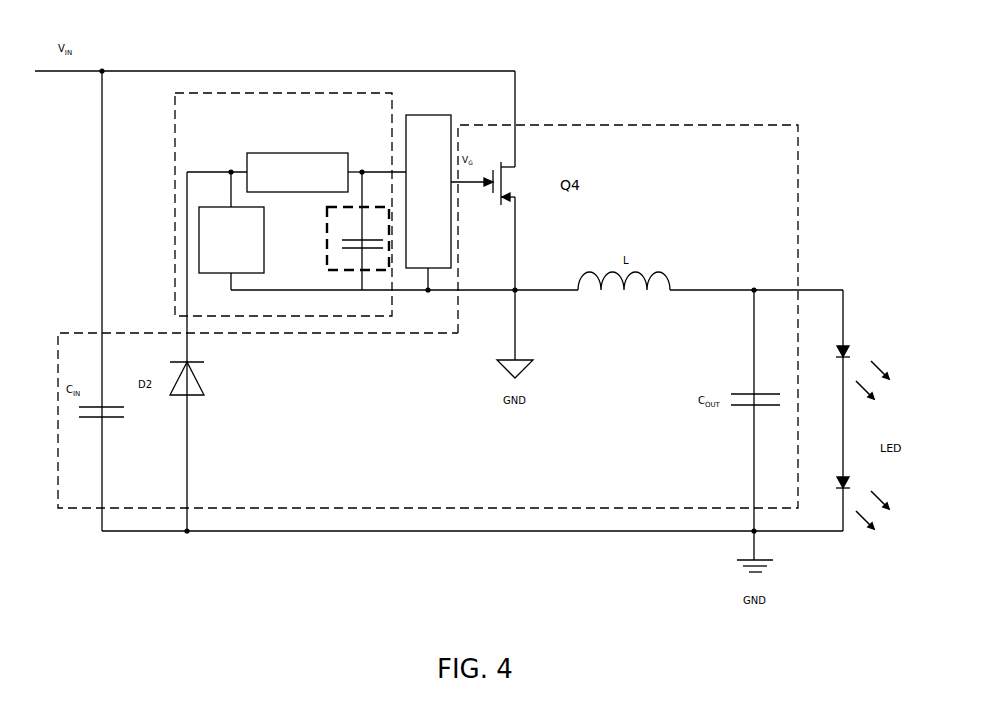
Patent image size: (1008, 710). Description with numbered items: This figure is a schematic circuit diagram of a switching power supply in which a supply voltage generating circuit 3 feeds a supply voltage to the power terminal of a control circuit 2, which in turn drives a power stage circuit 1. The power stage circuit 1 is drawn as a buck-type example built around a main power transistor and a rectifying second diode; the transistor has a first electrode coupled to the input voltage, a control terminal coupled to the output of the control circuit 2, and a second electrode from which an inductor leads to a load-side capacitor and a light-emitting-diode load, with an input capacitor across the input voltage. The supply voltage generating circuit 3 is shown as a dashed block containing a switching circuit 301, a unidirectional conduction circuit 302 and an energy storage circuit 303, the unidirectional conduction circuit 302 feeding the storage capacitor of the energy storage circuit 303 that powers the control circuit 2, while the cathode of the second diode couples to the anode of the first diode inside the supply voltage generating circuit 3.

The power stage circuit 1 is at (628, 125).
The control circuit 2 is at (428, 115).
The supply voltage generating circuit 3 is at (283, 188).
The switching circuit 301 is at (264, 250).
The unidirectional conduction circuit 302 is at (293, 153).
The energy storage circuit 303 is at (337, 270).